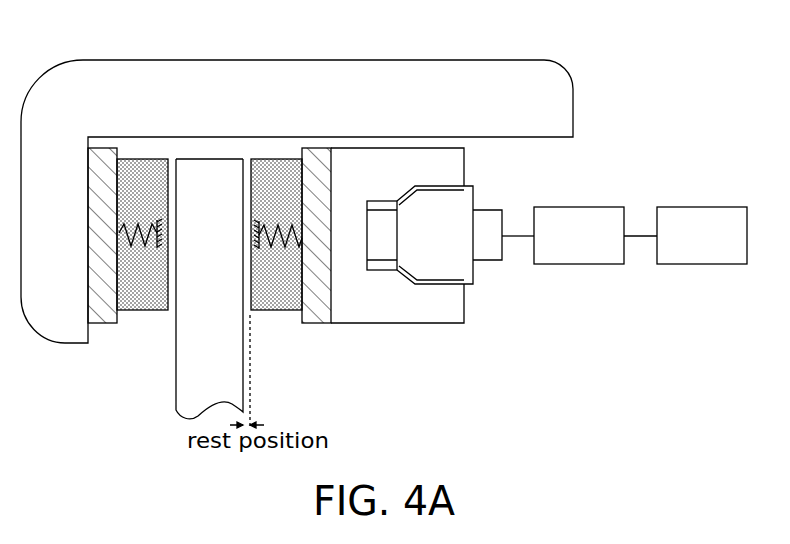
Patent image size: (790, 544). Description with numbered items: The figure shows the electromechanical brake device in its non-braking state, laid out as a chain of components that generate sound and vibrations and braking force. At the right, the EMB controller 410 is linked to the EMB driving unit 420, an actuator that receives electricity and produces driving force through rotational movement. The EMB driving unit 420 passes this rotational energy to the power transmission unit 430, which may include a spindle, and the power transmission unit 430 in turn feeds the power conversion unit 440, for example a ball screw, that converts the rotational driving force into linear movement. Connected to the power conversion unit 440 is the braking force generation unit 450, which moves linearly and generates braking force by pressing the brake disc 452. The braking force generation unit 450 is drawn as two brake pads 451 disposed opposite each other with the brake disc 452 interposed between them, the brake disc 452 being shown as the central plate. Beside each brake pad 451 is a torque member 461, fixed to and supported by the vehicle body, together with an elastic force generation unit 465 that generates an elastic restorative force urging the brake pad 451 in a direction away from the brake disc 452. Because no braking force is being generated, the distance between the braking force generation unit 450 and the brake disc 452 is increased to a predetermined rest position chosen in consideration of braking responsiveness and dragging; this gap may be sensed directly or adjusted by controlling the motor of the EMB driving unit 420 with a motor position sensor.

The EMB controller 410 is at (685, 235).
The EMB driving unit 420 is at (563, 235).
The power transmission unit 430 is at (502, 204).
The power conversion unit 440 is at (408, 325).
The braking force generation unit 450 is at (591, 355).
The brake pad 451 is at (141, 304).
The brake disc 452 is at (178, 388).
The torque member 461 is at (155, 224).
The elastic force generation unit 465 is at (129, 246).